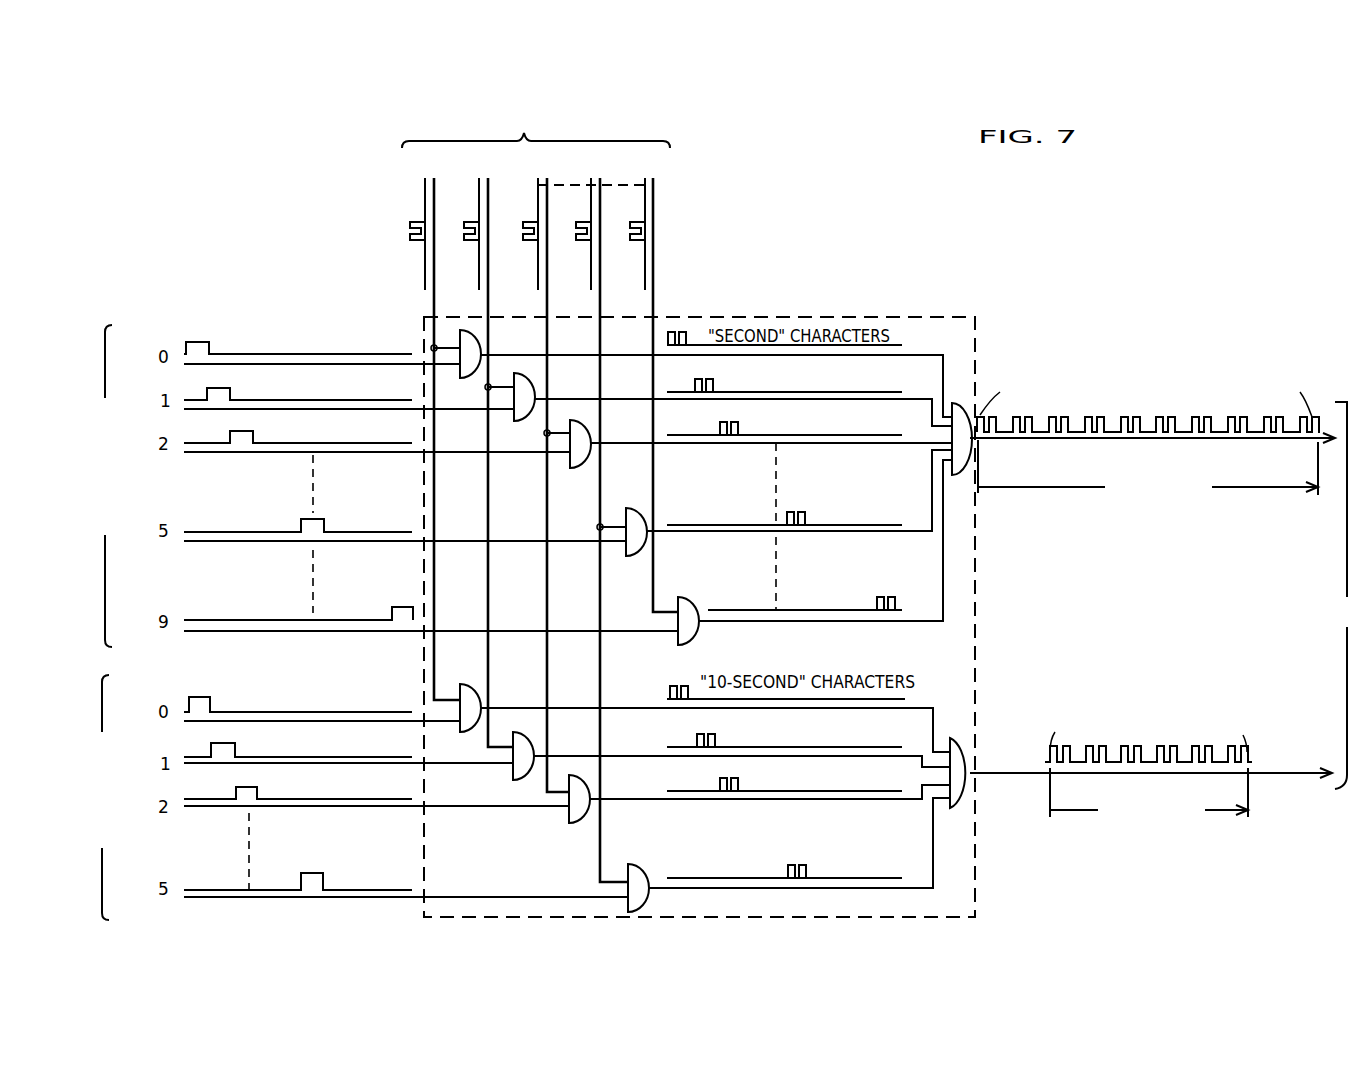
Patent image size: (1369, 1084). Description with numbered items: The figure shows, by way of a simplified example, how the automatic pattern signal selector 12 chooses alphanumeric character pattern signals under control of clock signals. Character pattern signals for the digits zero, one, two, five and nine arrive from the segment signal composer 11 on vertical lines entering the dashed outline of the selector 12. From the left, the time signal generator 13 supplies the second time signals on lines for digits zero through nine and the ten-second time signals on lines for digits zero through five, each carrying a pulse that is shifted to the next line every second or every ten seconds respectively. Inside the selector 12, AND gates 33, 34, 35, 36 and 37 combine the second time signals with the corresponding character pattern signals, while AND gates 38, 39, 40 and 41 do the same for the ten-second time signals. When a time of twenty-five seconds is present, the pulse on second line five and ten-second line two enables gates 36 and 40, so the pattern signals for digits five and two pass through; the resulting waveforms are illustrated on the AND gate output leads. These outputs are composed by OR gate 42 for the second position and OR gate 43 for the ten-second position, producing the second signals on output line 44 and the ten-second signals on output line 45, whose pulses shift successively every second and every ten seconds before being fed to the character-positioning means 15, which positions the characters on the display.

The segment signal composer 11 is at (536, 177).
The automatic pattern signal selector 12 is at (778, 317).
The time signal generator 13 is at (101, 622).
The character-positioning means 15 is at (1275, 595).
The AND gate 33 is at (463, 380).
The AND gate 34 is at (539, 375).
The AND gate 35 is at (594, 420).
The AND gate 36 is at (631, 502).
The AND gate 37 is at (698, 578).
The AND gate 38 is at (465, 685).
The AND gate 39 is at (540, 732).
The AND gate 40 is at (595, 776).
The AND gate 41 is at (658, 860).
The OR gate 42 is at (958, 403).
The OR gate 43 is at (956, 738).
The output line 44 is at (1332, 430).
The output line 45 is at (1333, 775).